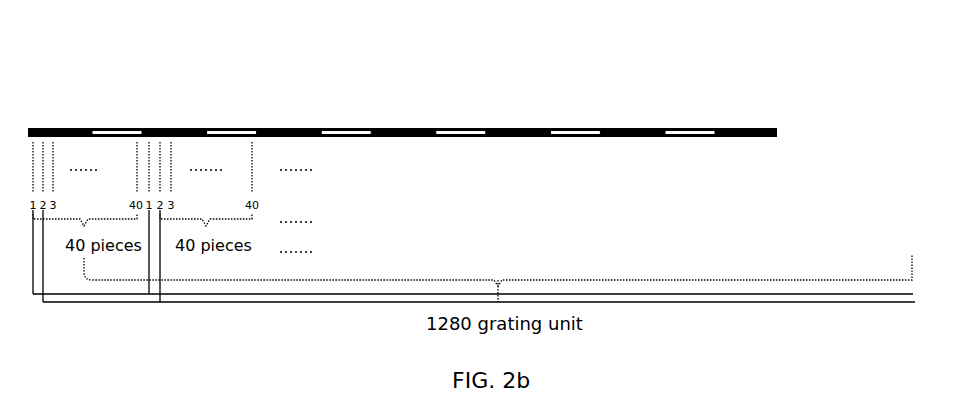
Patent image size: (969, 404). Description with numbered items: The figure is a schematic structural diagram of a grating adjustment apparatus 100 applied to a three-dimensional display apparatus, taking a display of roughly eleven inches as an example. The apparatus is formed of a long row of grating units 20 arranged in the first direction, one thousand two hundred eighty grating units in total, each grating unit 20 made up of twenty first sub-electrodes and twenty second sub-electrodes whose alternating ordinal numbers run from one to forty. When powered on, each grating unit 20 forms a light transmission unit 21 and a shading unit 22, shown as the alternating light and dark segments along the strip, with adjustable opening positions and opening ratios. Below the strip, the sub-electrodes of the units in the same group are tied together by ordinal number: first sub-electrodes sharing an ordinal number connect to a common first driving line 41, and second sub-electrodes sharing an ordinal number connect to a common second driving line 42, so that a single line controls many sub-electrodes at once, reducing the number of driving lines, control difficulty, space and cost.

The grating adjustment apparatus 100 is at (777, 131).
The grating unit 20 is at (85, 92).
The light transmission unit 21 is at (117, 109).
The shading unit 22 is at (70, 128).
The first driving line 41 is at (73, 294).
The second driving line 42 is at (126, 302).